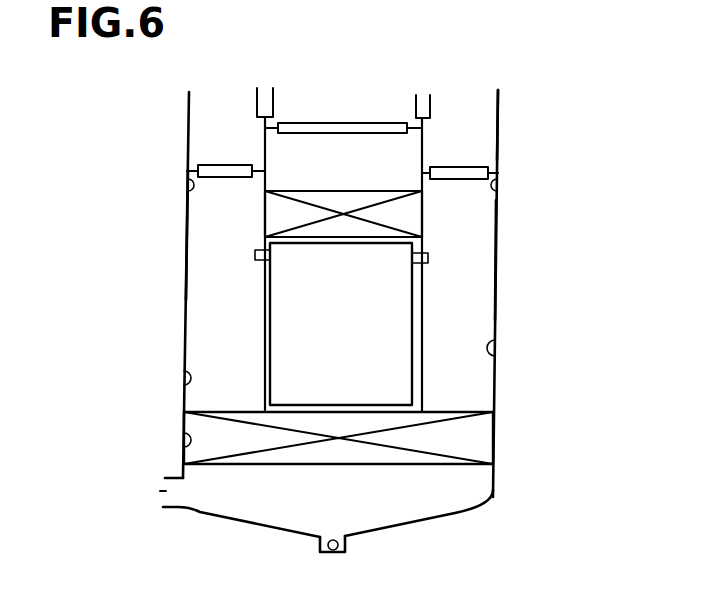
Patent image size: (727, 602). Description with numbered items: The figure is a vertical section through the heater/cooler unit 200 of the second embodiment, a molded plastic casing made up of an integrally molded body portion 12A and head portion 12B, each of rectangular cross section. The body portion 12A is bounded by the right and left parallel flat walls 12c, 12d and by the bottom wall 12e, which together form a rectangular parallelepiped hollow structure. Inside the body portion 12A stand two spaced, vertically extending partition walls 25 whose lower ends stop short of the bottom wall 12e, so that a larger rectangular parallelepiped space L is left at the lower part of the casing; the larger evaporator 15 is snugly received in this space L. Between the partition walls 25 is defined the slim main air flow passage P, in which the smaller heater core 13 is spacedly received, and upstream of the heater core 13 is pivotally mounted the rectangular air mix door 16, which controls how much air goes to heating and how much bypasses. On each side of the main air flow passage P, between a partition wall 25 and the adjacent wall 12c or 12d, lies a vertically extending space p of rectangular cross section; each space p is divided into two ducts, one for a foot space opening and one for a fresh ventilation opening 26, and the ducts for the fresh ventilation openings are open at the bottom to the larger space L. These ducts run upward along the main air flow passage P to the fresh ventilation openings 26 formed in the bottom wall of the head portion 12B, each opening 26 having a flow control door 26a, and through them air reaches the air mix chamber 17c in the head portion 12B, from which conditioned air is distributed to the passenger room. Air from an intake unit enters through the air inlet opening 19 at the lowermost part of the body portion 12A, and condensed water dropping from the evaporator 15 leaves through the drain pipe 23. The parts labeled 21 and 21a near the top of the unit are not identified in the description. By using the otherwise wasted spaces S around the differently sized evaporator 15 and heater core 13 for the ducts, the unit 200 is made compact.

The heater/cooler unit 200 is at (620, 82).
The body portion 12A is at (524, 363).
The head portion 12B is at (512, 152).
The right flat wall 12c is at (187, 298).
The left flat wall 12d is at (495, 318).
The bottom wall 12e is at (425, 533).
The air inlet opening 19 is at (165, 492).
The drain pipe 23 is at (346, 549).
The support tabs 21 is at (274, 103).
The support bar 21a is at (358, 123).
The air mix chamber 17c is at (382, 152).
The flow control door 26a is at (222, 165).
The fresh ventilation opening 26 is at (188, 190).
The heater core 13 is at (410, 220).
The air mix door 16 is at (355, 326).
The partition wall 25 is at (423, 303).
The evaporator 15 is at (492, 445).
The spaces S is at (220, 262).
The vertically extending space p is at (183, 372).
The main air flow passage P is at (412, 352).
The larger space L is at (183, 434).